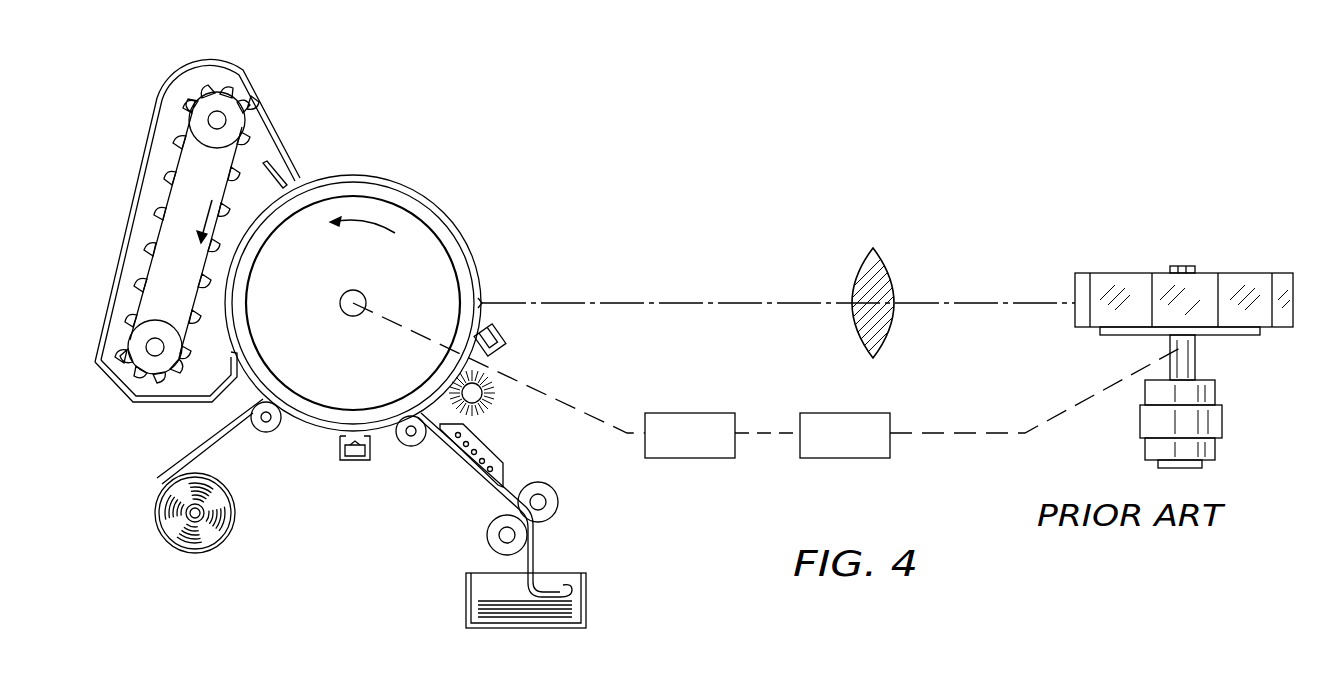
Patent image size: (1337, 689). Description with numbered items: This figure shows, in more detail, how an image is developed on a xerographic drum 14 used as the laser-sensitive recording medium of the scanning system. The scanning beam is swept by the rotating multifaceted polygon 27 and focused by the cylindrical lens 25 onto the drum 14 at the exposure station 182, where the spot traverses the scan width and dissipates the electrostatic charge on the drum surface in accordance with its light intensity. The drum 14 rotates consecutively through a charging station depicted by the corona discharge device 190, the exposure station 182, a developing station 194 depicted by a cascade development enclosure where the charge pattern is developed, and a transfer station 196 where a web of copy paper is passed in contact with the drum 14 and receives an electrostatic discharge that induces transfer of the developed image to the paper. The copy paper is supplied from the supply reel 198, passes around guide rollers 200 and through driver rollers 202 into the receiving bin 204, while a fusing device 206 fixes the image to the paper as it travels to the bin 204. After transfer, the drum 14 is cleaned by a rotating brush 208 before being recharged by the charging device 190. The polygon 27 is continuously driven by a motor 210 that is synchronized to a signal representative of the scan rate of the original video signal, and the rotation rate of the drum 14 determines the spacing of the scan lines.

The xerographic drum 14 is at (431, 201).
The cylindrical lens 25 is at (886, 276).
The rotating multifaceted polygon 27 is at (1232, 273).
The exposure station 182 is at (484, 303).
The corona discharge device 190 is at (503, 341).
The developing station 194 is at (285, 128).
The transfer station 196 is at (353, 463).
The supply reel 198 is at (236, 511).
The guide rollers 200 is at (267, 433).
The driver rollers 202 is at (488, 533).
The receiving bin 204 is at (588, 593).
The fusing device 206 is at (505, 470).
The rotating brush 208 is at (493, 395).
The motor 210 is at (1140, 431).